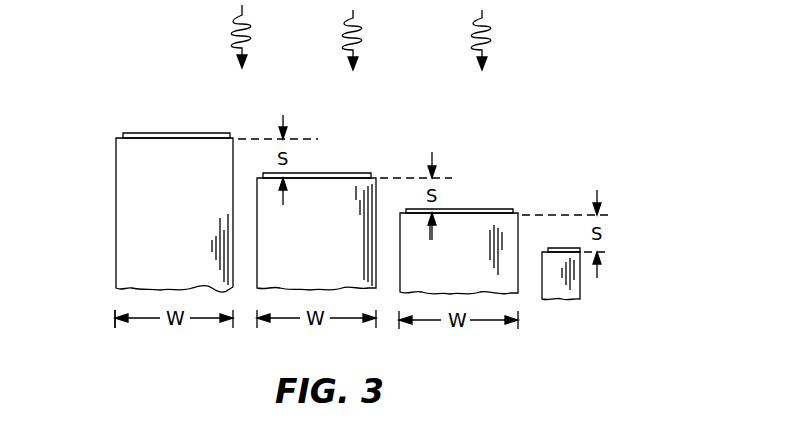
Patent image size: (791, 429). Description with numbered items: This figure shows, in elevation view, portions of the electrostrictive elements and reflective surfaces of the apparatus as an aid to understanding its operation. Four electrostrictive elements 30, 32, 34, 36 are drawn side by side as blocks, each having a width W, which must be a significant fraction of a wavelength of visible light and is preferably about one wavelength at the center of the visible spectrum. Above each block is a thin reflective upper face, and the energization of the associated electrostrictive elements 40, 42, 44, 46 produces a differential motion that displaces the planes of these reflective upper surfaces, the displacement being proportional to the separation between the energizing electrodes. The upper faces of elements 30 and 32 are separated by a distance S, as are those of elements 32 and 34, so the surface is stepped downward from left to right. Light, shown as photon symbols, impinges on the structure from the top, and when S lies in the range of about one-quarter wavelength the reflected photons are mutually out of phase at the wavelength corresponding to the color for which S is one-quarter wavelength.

The electrostrictive element 30 is at (124, 203).
The electrostrictive element 32 is at (324, 198).
The electrostrictive element 34 is at (466, 228).
The electrostrictive element 36 is at (562, 288).
The electrostrictive element 40 is at (131, 133).
The electrostrictive element 42 is at (358, 173).
The electrostrictive element 44 is at (503, 209).
The electrostrictive element 46 is at (566, 248).